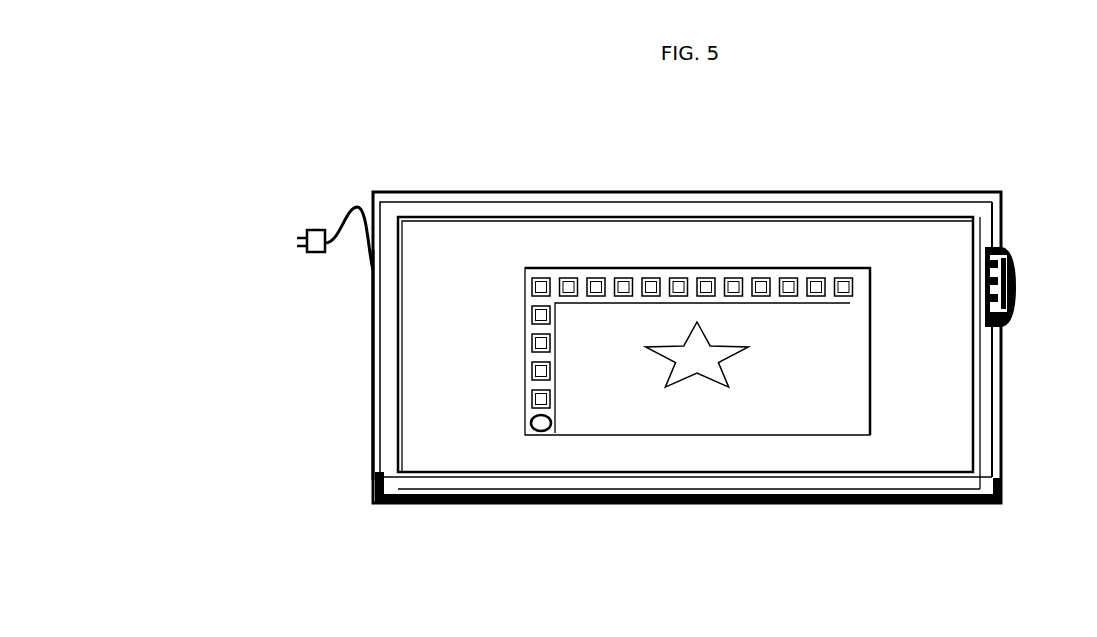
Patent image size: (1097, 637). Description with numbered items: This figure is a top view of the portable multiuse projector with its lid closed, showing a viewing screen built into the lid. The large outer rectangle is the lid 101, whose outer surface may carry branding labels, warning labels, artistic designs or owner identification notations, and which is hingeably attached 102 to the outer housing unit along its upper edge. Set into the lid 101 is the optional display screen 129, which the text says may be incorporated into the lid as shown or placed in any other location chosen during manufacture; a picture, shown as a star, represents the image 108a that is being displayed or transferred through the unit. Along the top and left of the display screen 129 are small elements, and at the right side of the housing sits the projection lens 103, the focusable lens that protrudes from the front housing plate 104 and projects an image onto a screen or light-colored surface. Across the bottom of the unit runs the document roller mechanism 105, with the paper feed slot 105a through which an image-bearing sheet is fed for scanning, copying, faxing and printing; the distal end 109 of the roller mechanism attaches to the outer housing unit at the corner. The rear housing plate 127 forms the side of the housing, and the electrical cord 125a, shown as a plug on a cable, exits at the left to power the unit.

The lid 101 is at (476, 232).
The hinge attachment 102 is at (1003, 193).
The projection lens 103 is at (541, 283).
The front housing plate 104 is at (996, 420).
The document roller mechanism 105 is at (497, 486).
The paper feed slot 105a is at (758, 478).
The image 108a is at (697, 340).
The distal end 109 is at (1000, 484).
The electrical cord 125a is at (313, 228).
The rear housing plate 127 is at (372, 370).
The display screen 129 is at (785, 326).